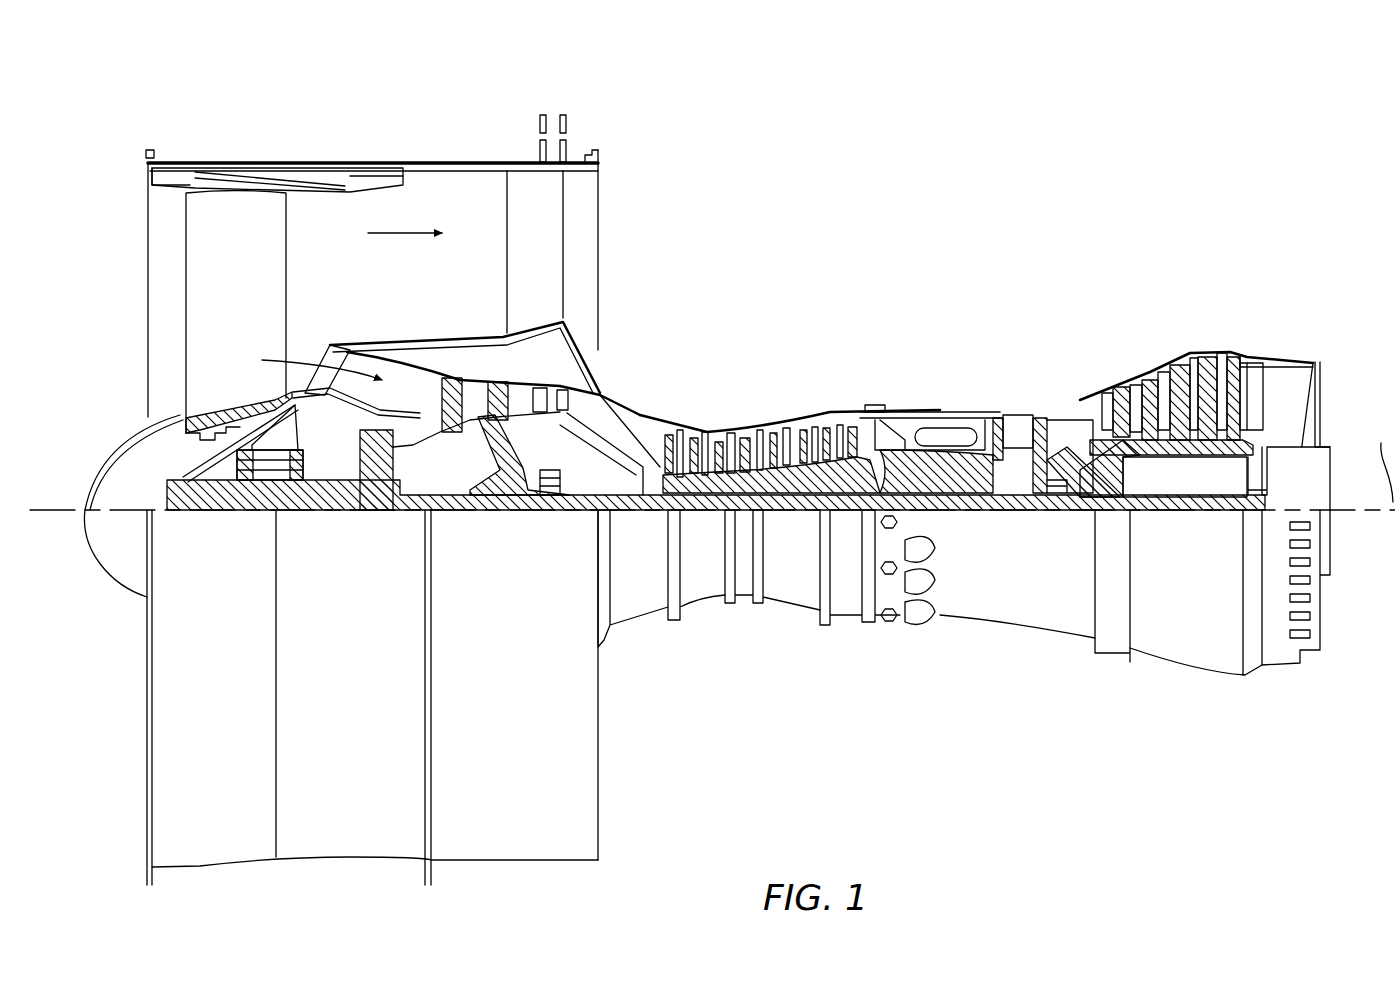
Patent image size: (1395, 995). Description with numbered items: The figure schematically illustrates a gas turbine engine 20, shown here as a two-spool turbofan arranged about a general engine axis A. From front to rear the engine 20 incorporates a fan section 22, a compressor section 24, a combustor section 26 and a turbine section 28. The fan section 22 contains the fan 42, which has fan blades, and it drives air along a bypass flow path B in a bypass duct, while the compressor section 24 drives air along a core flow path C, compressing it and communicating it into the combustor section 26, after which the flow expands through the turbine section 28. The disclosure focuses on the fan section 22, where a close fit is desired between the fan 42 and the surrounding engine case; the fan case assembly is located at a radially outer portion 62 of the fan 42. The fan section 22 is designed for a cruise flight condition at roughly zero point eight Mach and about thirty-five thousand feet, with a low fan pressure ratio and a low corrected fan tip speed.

The gas turbine engine 20 is at (1187, 234).
The fan section 22 is at (405, 140).
The compressor section 24 is at (774, 386).
The combustor section 26 is at (940, 398).
The turbine section 28 is at (1123, 344).
The fan 42 is at (245, 272).
The radially outer portion 62 is at (157, 198).